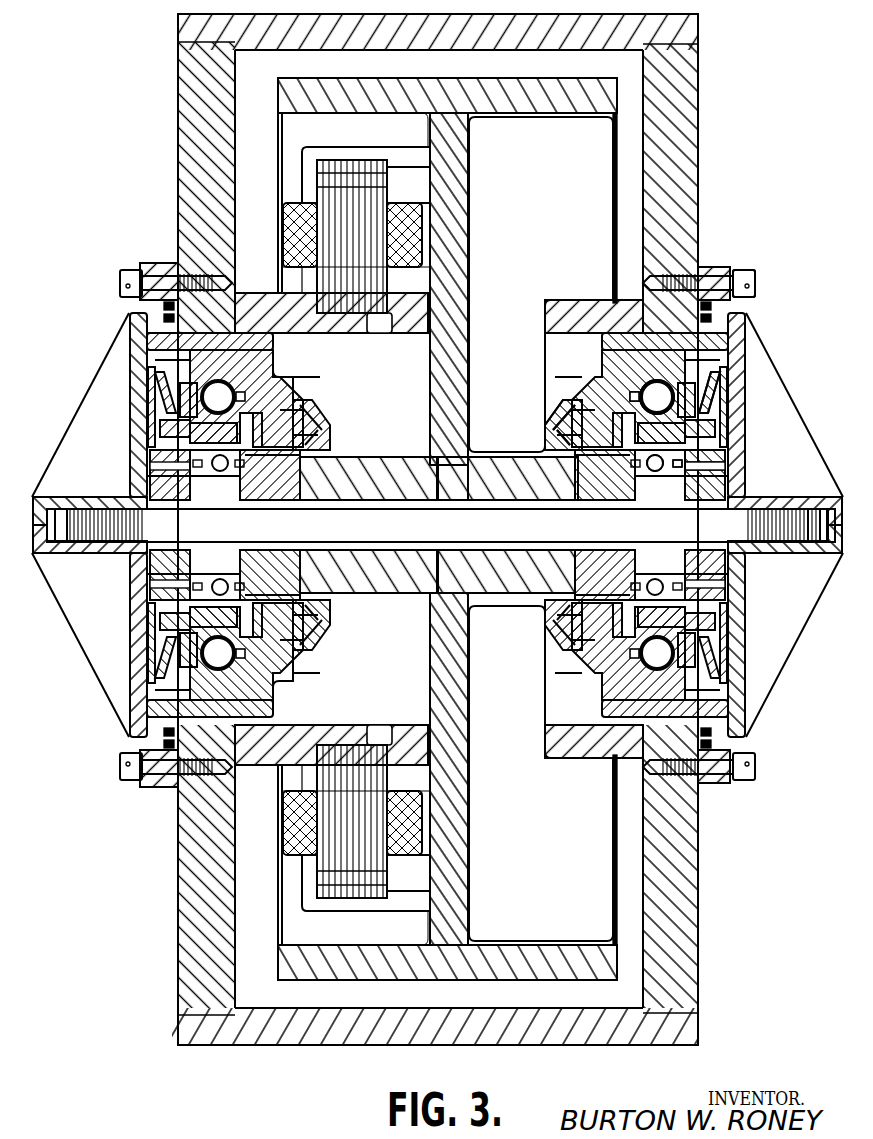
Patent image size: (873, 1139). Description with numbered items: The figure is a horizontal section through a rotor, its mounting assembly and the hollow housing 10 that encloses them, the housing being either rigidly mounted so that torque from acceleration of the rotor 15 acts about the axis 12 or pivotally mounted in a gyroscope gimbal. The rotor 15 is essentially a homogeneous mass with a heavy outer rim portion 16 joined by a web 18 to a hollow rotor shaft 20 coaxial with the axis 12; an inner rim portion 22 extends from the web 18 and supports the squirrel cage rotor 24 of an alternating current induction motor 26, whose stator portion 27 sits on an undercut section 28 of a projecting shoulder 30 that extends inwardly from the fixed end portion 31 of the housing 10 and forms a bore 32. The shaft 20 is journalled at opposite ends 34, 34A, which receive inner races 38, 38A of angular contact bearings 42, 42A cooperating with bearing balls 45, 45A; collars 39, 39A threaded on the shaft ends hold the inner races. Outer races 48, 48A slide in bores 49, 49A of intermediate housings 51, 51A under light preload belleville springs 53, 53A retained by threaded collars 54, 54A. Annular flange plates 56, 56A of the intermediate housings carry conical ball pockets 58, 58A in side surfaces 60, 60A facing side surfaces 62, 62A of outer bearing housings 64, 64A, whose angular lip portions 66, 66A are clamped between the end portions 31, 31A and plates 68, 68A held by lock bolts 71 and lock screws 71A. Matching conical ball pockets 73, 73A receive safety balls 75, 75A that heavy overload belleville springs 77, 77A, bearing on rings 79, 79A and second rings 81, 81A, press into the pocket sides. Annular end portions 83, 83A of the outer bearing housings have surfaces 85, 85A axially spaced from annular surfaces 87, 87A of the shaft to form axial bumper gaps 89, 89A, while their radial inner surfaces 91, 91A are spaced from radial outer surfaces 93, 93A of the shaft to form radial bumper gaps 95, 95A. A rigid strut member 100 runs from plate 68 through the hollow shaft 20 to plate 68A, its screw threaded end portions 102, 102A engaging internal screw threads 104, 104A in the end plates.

The hollow housing 10 is at (148, 110).
The axis 12 is at (830, 478).
The rotor 15 is at (276, 84).
The heavy outer rim portion 16 is at (556, 119).
The web 18 is at (472, 258).
The hollow rotor shaft 20 is at (480, 464).
The inner rim portion 22 is at (384, 160).
The squirrel cage rotor 24 is at (350, 160).
The alternating current induction motor 26 is at (290, 178).
The stator portion 27 is at (343, 253).
The undercut section 28 is at (386, 322).
The projecting shoulder 30 is at (262, 296).
The fixed end portion 31 is at (180, 165).
The fixed end portion 31A is at (700, 172).
The bore 32 is at (305, 338).
The end of rotor shaft 34 is at (256, 475).
The end of rotor shaft 34A is at (616, 476).
The inner race 38 is at (220, 472).
The inner race 38A is at (656, 472).
The collar 39 is at (170, 500).
The collar 39A is at (706, 500).
The angular contact type bearing 42 is at (150, 477).
The angular contact type bearing 42A is at (726, 478).
The bearing balls 45 is at (200, 470).
The bearing ball 45A is at (672, 470).
The outer bearing race 48 is at (213, 432).
The outer race 48A is at (661, 433).
The bore 49 is at (268, 428).
The bore 49A is at (606, 426).
The intermediate housing 51 is at (181, 421).
The intermediate housing 51A is at (685, 424).
The preload belleville spring 53 is at (170, 452).
The preload belleville spring 53A is at (706, 452).
The collar 54 is at (150, 465).
The collar 54A is at (726, 466).
The annular flange plate 56 is at (150, 362).
The annular plate 56A is at (726, 362).
The conical ball pockets 58 is at (212, 376).
The conical ball pockets 58A is at (662, 375).
The side surface 60 is at (240, 390).
The side surface 60A is at (636, 390).
The side surface 62 is at (272, 366).
The side surface 62A is at (604, 364).
The outer bearing housing 64 is at (297, 382).
The outer bearing housing 64A is at (580, 382).
The angular lip portion 66 is at (128, 338).
The angular lip portion 66A is at (746, 337).
The plate 68 is at (130, 400).
The plate 68A is at (746, 394).
The lock bolts 71 is at (126, 270).
The lock screws 71A is at (748, 268).
The conical ball pockets 73 is at (262, 420).
The conical ball pockets 73A is at (612, 413).
The safety balls 75 is at (278, 690).
The safety balls 75A is at (592, 690).
The heavy overload belleville spring 77 is at (160, 402).
The heavy overload belleville spring 77A is at (720, 400).
The ring 79 is at (180, 420).
The ring 79A is at (696, 420).
The second ring 81 is at (148, 380).
The second ring 81A is at (728, 410).
The annular end portion 83 is at (318, 448).
The annular end portion 83A is at (555, 452).
The surface 85 is at (326, 412).
The surface 85A is at (556, 442).
The annular surface 87 is at (330, 422).
The annular surface 87A is at (556, 432).
The axial bumper gap 89 is at (316, 400).
The axial bumper gap 89A is at (558, 402).
The radial inner surface 91 is at (310, 458).
The radial inner surface 91A is at (562, 466).
The radial outer surface 93 is at (285, 468).
The radial outer surface 93A is at (590, 466).
The radial bumper gap 95 is at (262, 472).
The radial bumper gap 95A is at (610, 474).
The rigid strut member 100 is at (452, 548).
The screw threaded end portion 102 is at (100, 546).
The screw threaded end portion 102A is at (792, 548).
The internal screw threads 104 is at (82, 546).
The internal screw threads 104A is at (772, 552).